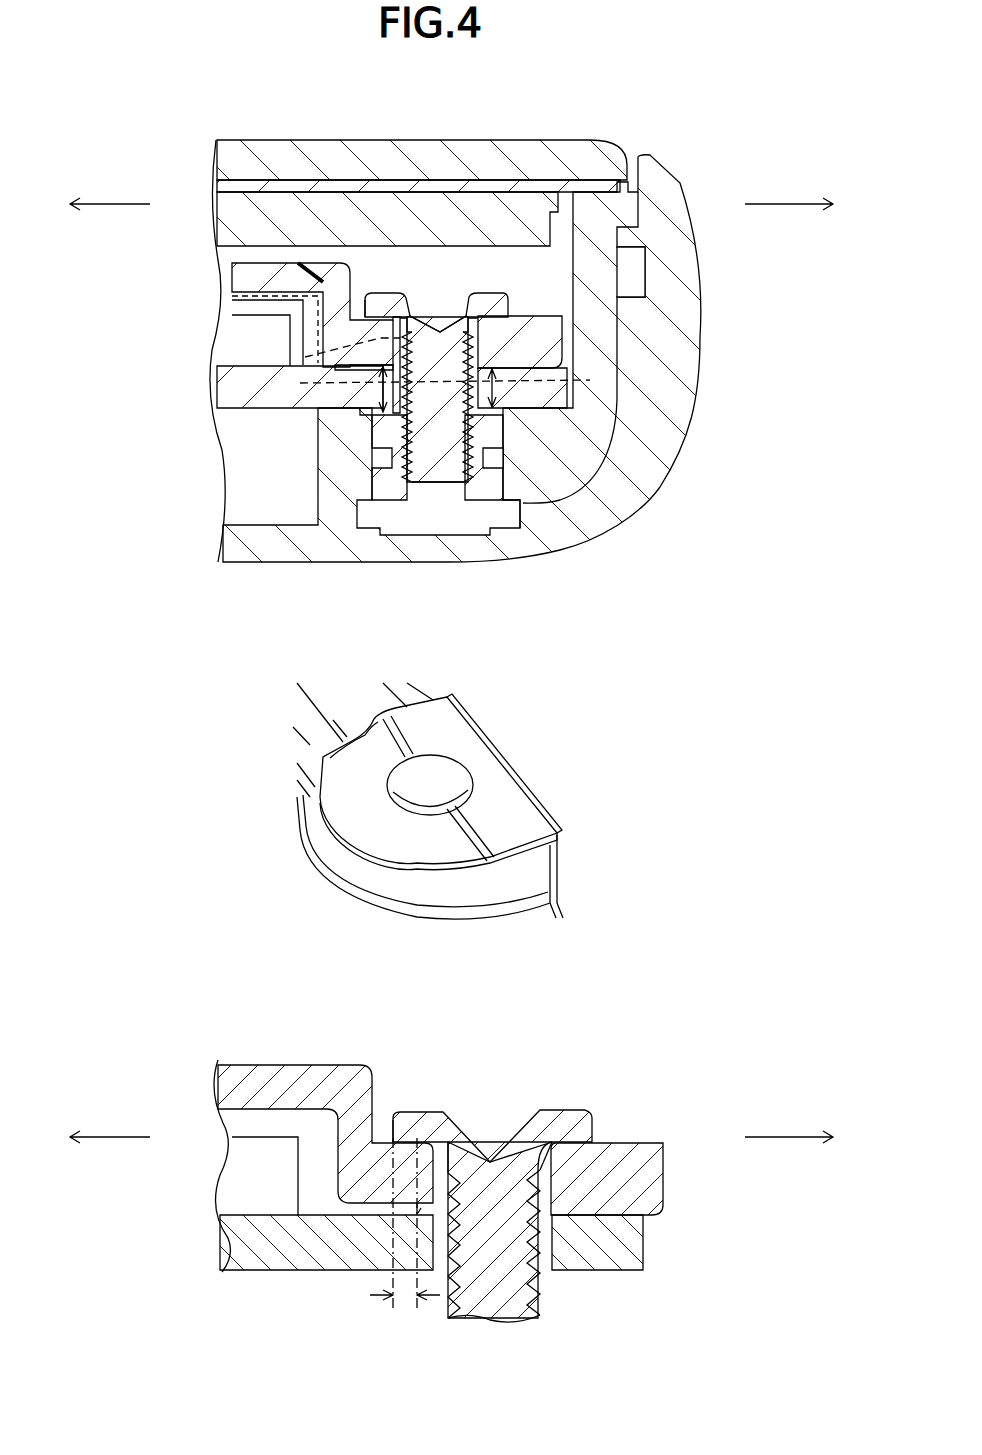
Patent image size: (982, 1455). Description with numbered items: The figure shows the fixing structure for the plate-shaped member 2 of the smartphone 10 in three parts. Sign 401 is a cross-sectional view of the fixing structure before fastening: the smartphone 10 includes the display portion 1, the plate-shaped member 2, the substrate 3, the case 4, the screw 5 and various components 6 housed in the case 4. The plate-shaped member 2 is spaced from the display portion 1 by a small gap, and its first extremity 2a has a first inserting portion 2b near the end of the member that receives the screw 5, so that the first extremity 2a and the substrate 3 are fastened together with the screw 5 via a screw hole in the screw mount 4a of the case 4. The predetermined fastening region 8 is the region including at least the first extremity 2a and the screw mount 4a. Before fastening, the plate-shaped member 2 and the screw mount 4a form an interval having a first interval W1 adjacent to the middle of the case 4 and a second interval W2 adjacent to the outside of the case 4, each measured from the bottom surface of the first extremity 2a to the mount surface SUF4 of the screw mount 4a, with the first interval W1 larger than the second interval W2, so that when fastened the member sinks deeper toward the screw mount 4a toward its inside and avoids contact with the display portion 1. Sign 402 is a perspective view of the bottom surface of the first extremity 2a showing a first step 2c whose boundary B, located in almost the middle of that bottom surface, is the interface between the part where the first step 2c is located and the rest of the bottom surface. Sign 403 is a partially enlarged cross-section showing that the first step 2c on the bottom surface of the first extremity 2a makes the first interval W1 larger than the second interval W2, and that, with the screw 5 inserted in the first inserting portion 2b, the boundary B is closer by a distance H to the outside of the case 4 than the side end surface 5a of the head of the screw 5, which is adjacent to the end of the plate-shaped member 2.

The display portion 1 is at (545, 186).
The plate-shaped member 2 is at (305, 262).
The first extremity 2a is at (550, 330).
The first inserting portion 2b is at (456, 312).
The first step 2c is at (322, 345).
The substrate 3 is at (226, 400).
The case 4 is at (620, 505).
The screw mount 4a is at (505, 415).
The screw 5 is at (385, 293).
The side end surface 5a is at (367, 302).
The various components 6 is at (262, 327).
The fastening region 8 is at (478, 333).
The smartphone 10 is at (652, 132).
The first interval W1 is at (378, 390).
The second interval W2 is at (500, 395).
The mount surface SUF4 is at (522, 410).
The boundary B is at (457, 852).
The distance H is at (405, 1239).
The cross-sectional view of fixing structure 401 is at (100, 108).
The perspective view of bottom surface of first extremity 402 is at (272, 660).
The partially enlarged cross-sectional view 403 is at (190, 1020).